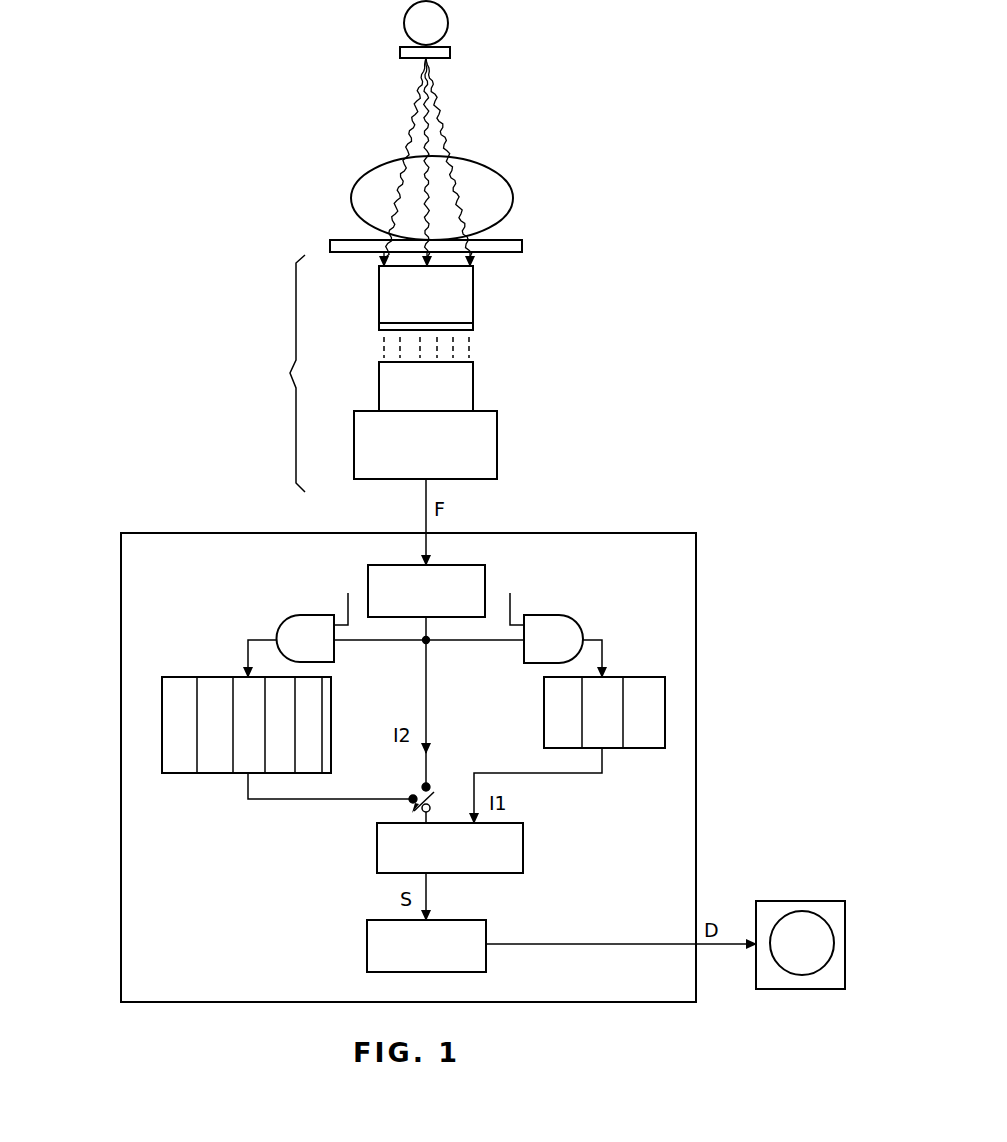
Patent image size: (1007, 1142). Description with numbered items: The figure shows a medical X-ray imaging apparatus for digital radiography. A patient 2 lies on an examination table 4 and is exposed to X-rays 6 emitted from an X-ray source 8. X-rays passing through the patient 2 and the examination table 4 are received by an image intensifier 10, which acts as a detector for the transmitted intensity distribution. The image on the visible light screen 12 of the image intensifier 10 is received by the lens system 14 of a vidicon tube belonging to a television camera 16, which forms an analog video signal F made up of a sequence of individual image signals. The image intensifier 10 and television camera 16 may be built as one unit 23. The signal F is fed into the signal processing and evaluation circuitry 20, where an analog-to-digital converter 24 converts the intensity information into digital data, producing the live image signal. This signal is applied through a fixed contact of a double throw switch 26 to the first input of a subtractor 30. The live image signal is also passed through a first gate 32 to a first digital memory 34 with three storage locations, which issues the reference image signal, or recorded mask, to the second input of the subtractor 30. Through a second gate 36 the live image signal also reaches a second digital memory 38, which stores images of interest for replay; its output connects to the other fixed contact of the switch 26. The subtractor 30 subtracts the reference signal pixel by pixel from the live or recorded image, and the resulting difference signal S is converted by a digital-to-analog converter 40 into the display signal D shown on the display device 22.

The patient 2 is at (512, 185).
The examination table 4 is at (518, 245).
The X-rays 6 is at (433, 125).
The X-ray source 8 is at (440, 25).
The image intensifier 10 is at (465, 298).
The visible light screen 12 is at (468, 327).
The lens system 14 is at (468, 383).
The television camera 16 is at (488, 448).
The signal processing and evaluation circuitry 20 is at (680, 541).
The display device 22 is at (778, 909).
The X-ray television system unit 23 is at (274, 388).
The analog-to-digital converter 24 is at (468, 572).
The double throw switch 26 is at (435, 797).
The subtractor 30 is at (512, 858).
The first gate 32 is at (562, 623).
The first digital memory 34 is at (638, 684).
The second gate 36 is at (292, 622).
The second digital memory 38 is at (178, 682).
The digital-to-analog converter 40 is at (458, 926).